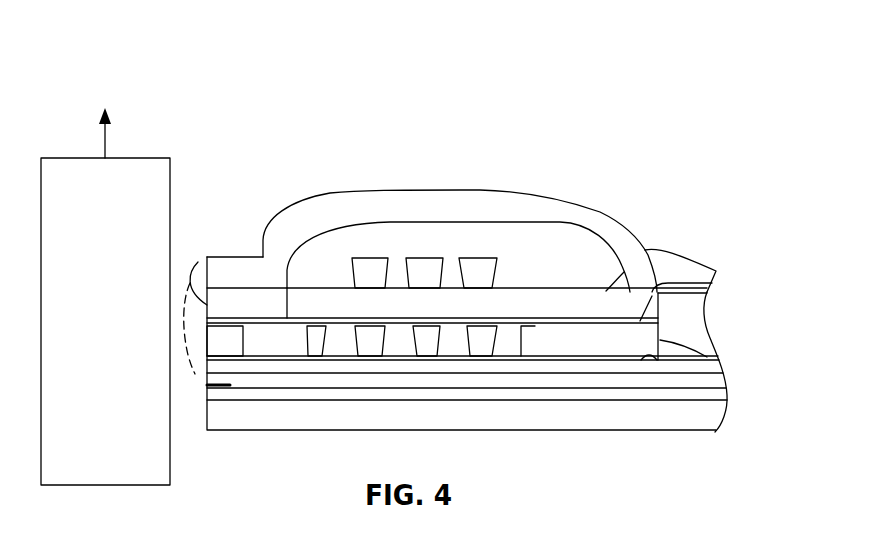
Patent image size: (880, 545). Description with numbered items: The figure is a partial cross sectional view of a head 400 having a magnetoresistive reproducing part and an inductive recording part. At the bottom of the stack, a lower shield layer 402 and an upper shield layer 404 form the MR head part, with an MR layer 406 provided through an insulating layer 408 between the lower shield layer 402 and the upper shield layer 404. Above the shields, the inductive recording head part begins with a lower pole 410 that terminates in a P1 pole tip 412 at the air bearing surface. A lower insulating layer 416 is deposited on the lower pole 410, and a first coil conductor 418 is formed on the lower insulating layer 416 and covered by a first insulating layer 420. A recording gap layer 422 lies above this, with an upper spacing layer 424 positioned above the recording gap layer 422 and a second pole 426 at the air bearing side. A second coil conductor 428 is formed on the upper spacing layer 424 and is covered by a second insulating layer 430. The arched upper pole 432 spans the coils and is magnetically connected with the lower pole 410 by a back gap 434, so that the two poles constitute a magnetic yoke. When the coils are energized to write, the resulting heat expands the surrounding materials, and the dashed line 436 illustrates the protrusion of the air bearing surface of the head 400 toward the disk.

The head 400 is at (339, 106).
The lower shield layer 402 is at (727, 422).
The upper shield layer 404 is at (730, 383).
The MR layer 406 is at (223, 389).
The insulating layer 408 is at (730, 398).
The lower pole 410 is at (728, 370).
The P1 pole tip 412 is at (244, 328).
The lower insulating layer 416 is at (690, 358).
The first coil conductor 418 is at (525, 343).
The first insulating layer 420 is at (662, 342).
The recording gap layer 422 is at (712, 284).
The upper spacing layer 424 is at (690, 254).
The second pole 426 is at (198, 262).
The second coil conductor 428 is at (497, 259).
The second insulating layer 430 is at (648, 240).
The upper pole 432 is at (567, 199).
The back gap 434 is at (706, 303).
The dashed line 436 is at (207, 383).